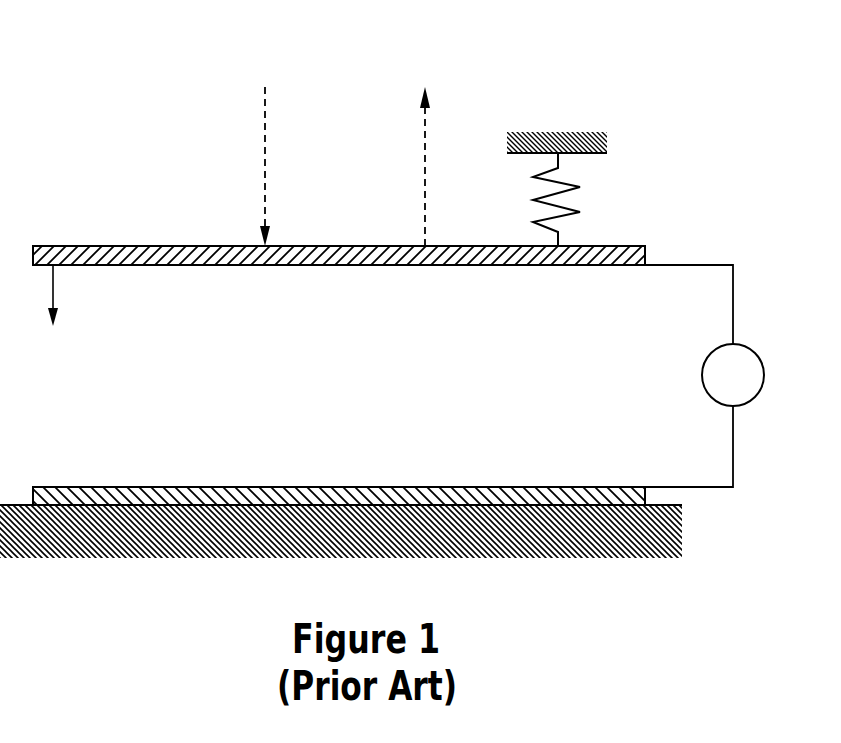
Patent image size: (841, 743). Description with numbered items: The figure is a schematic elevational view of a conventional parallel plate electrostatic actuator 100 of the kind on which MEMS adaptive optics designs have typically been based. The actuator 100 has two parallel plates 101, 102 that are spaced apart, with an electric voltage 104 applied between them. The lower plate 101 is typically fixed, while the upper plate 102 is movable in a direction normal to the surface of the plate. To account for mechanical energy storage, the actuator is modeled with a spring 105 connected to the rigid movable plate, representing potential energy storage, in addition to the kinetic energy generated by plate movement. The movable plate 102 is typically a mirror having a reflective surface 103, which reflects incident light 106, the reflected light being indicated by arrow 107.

The parallel plate electrostatic actuator 100 is at (131, 70).
The lower plate 101 is at (160, 487).
The upper plate 102 is at (217, 266).
The reflective surface 103 is at (191, 232).
The electric voltage 104 is at (764, 378).
The spring 105 is at (572, 207).
The incident light 106 is at (263, 188).
The arrow indicating reflected light 107 is at (427, 184).